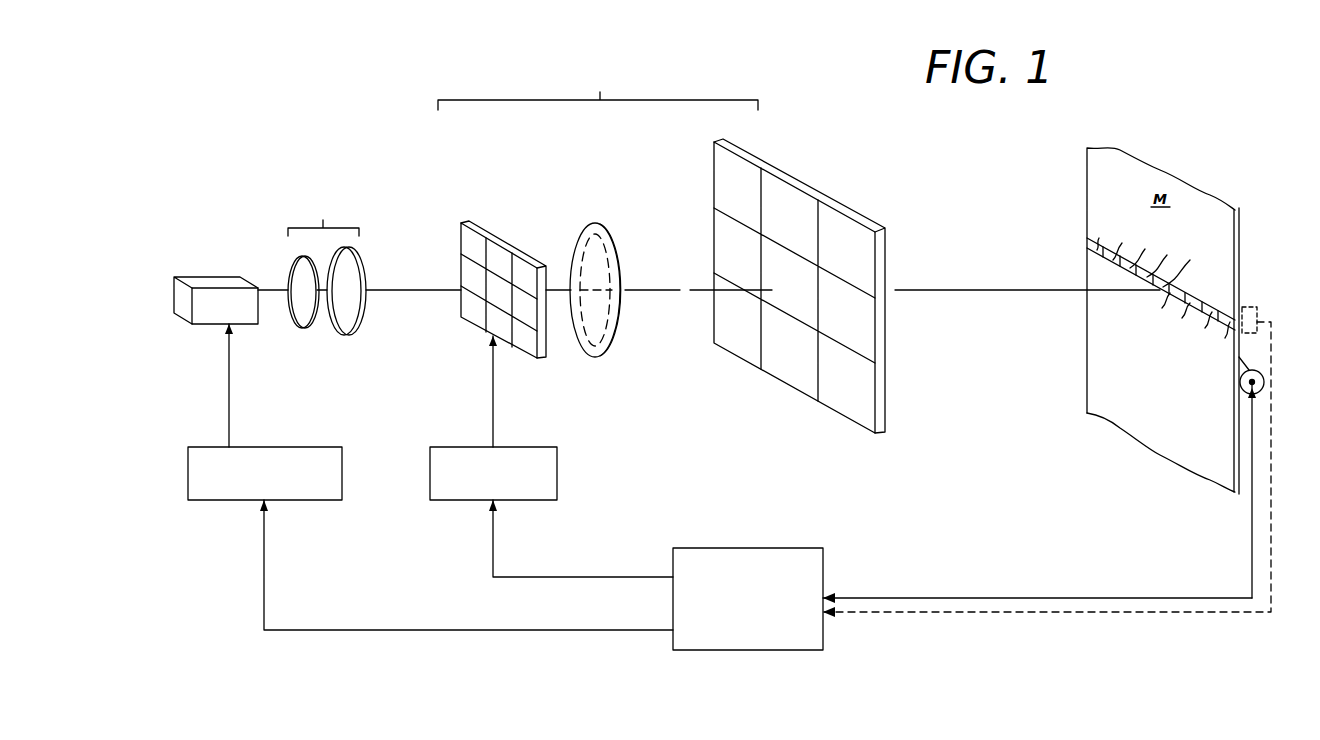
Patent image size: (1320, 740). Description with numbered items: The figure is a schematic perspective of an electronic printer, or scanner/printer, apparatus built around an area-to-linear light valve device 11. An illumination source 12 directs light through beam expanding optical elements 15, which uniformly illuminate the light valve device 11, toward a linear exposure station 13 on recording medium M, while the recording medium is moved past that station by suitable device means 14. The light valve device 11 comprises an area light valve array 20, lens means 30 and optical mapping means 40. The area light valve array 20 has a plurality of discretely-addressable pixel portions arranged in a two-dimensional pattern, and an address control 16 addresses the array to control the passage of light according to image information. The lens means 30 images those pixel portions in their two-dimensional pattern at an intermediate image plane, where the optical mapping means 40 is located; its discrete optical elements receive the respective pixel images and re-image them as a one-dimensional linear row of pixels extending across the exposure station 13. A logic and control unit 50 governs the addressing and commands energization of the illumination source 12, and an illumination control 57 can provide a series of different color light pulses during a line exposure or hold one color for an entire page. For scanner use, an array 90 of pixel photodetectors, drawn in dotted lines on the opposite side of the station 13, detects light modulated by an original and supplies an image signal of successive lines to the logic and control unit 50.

The area-to-linear light valve device 11 is at (598, 91).
The illumination source 12 is at (222, 277).
The linear exposure station 13 is at (1087, 242).
The drive means 14 is at (1265, 387).
The beam expanding optical elements 15 is at (327, 267).
The address control 16 is at (538, 447).
The area light valve array 20 is at (497, 232).
The lens means 30 is at (597, 222).
The optical mapping means 40 is at (828, 204).
The logic and control unit 50 is at (708, 548).
The illumination control 57 is at (330, 447).
The photodetector array 90 is at (1250, 304).